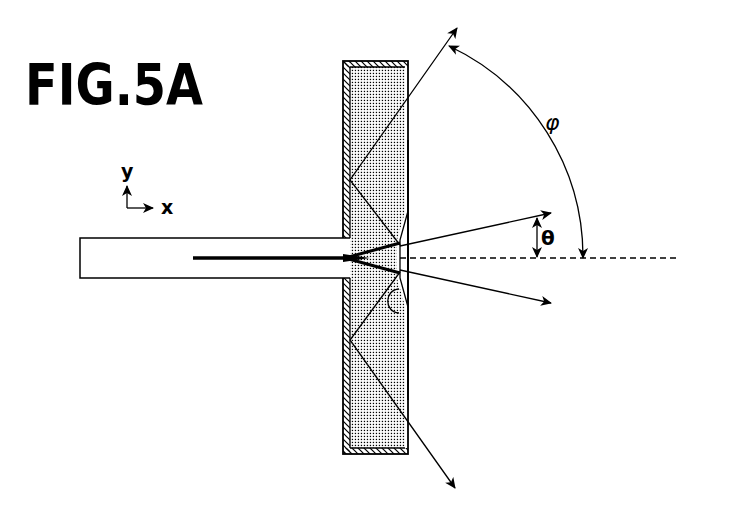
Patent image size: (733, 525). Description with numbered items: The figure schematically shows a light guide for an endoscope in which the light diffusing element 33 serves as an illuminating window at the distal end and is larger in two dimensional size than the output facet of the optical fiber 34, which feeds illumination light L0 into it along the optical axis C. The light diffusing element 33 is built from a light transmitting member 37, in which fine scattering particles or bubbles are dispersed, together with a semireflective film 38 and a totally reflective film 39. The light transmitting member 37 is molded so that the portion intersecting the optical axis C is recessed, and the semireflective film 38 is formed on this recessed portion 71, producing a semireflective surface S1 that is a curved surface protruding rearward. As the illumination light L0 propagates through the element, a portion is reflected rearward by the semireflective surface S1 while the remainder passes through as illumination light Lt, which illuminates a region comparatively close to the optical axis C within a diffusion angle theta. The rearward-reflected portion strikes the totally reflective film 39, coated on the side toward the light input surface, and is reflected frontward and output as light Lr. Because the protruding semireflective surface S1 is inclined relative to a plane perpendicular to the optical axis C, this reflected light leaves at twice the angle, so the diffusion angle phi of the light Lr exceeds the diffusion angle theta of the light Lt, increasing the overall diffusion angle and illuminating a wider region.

The light diffusing element 33 is at (375, 293).
The optical fiber 34 is at (143, 278).
The light transmitting member 37 is at (357, 375).
The semireflective film 38 is at (409, 228).
The totally reflective film 39 is at (343, 408).
The recessed portion 71 is at (412, 233).
The semireflective surface S1 is at (405, 302).
The illumination light L0 is at (271, 262).
The transmitted illumination light Lt is at (518, 220).
The reflected light Lr is at (435, 53).
The optical axis C is at (548, 260).